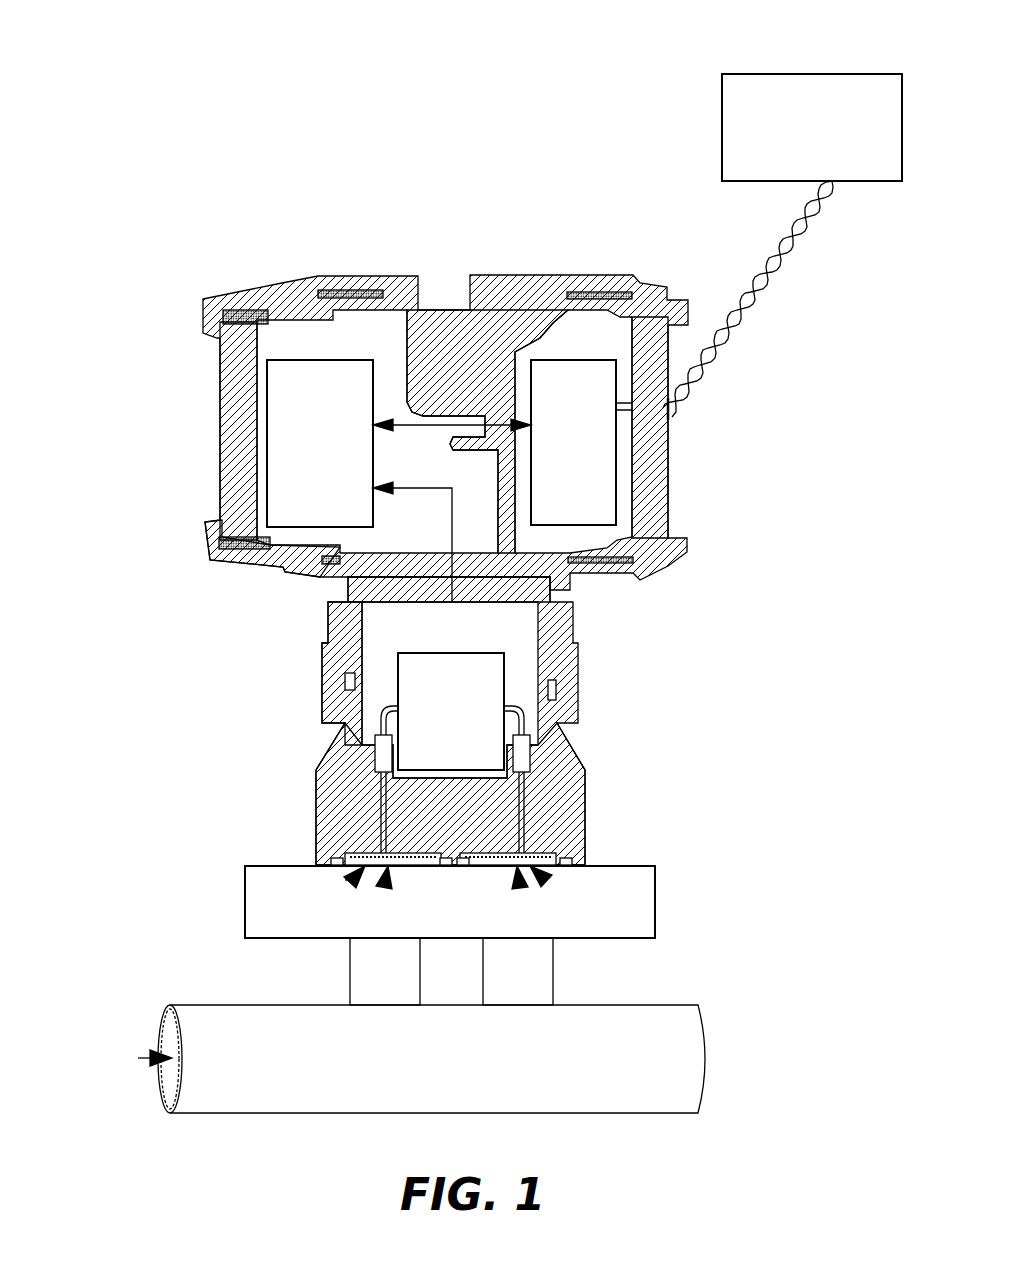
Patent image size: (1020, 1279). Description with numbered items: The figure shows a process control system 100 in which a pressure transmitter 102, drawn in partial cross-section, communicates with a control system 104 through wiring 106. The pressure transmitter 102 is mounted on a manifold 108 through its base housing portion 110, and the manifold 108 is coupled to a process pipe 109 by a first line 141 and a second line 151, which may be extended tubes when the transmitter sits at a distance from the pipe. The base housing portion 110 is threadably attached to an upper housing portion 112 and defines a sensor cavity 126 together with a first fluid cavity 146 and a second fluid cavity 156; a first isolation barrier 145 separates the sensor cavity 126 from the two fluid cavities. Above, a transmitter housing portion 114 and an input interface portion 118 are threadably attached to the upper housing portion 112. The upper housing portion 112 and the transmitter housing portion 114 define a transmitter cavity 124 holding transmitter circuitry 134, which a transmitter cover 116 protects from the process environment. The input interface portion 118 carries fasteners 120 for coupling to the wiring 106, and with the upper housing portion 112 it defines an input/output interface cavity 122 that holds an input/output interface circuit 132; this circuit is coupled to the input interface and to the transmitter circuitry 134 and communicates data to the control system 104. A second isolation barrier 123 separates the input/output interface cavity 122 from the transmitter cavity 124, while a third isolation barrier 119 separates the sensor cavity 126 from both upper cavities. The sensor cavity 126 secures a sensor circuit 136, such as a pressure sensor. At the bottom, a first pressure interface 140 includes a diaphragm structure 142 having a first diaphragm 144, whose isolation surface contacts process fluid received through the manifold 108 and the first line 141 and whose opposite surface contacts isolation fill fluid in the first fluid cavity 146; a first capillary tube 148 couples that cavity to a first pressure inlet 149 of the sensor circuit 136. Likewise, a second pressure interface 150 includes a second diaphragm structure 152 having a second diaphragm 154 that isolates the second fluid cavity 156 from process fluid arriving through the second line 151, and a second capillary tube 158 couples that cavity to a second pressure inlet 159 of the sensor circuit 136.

The process control system 100 is at (168, 42).
The pressure transmitter 102 is at (440, 367).
The control system 104 is at (722, 118).
The wiring 106 is at (792, 257).
The manifold 108 is at (245, 905).
The pipe 109 is at (190, 1005).
The base housing portion 110 is at (496, 721).
The upper housing portion 112 is at (340, 673).
The transmitter housing portion 114 is at (206, 553).
The transmitter cover 116 is at (229, 425).
The input interface portion 118 is at (650, 480).
The third isolation barrier 119 is at (368, 588).
The fasteners 120 is at (668, 410).
The input/output interface cavity 122 is at (563, 326).
The second isolation barrier 123 is at (474, 375).
The transmitter cavity 124 is at (299, 325).
The sensor cavity 126 is at (546, 640).
The input/output interface circuit 132 is at (573, 442).
The transmitter circuitry 134 is at (320, 443).
The sensor circuit 136 is at (451, 711).
The first pressure interface 140 is at (345, 891).
The first line 141 is at (350, 975).
The diaphragm structure 142 is at (384, 886).
The first diaphragm 144 is at (358, 855).
The first isolation barrier 145 is at (565, 779).
The first fluid cavity 146 is at (348, 840).
The first capillary tube 148 is at (380, 805).
The first pressure inlet 149 is at (380, 718).
The second pressure interface 150 is at (520, 888).
The second line 151 is at (553, 978).
The second diaphragm structure 152 is at (548, 882).
The second diaphragm 154 is at (560, 860).
The second fluid cavity 156 is at (540, 848).
The second capillary tube 158 is at (526, 812).
The second pressure inlet 159 is at (520, 727).